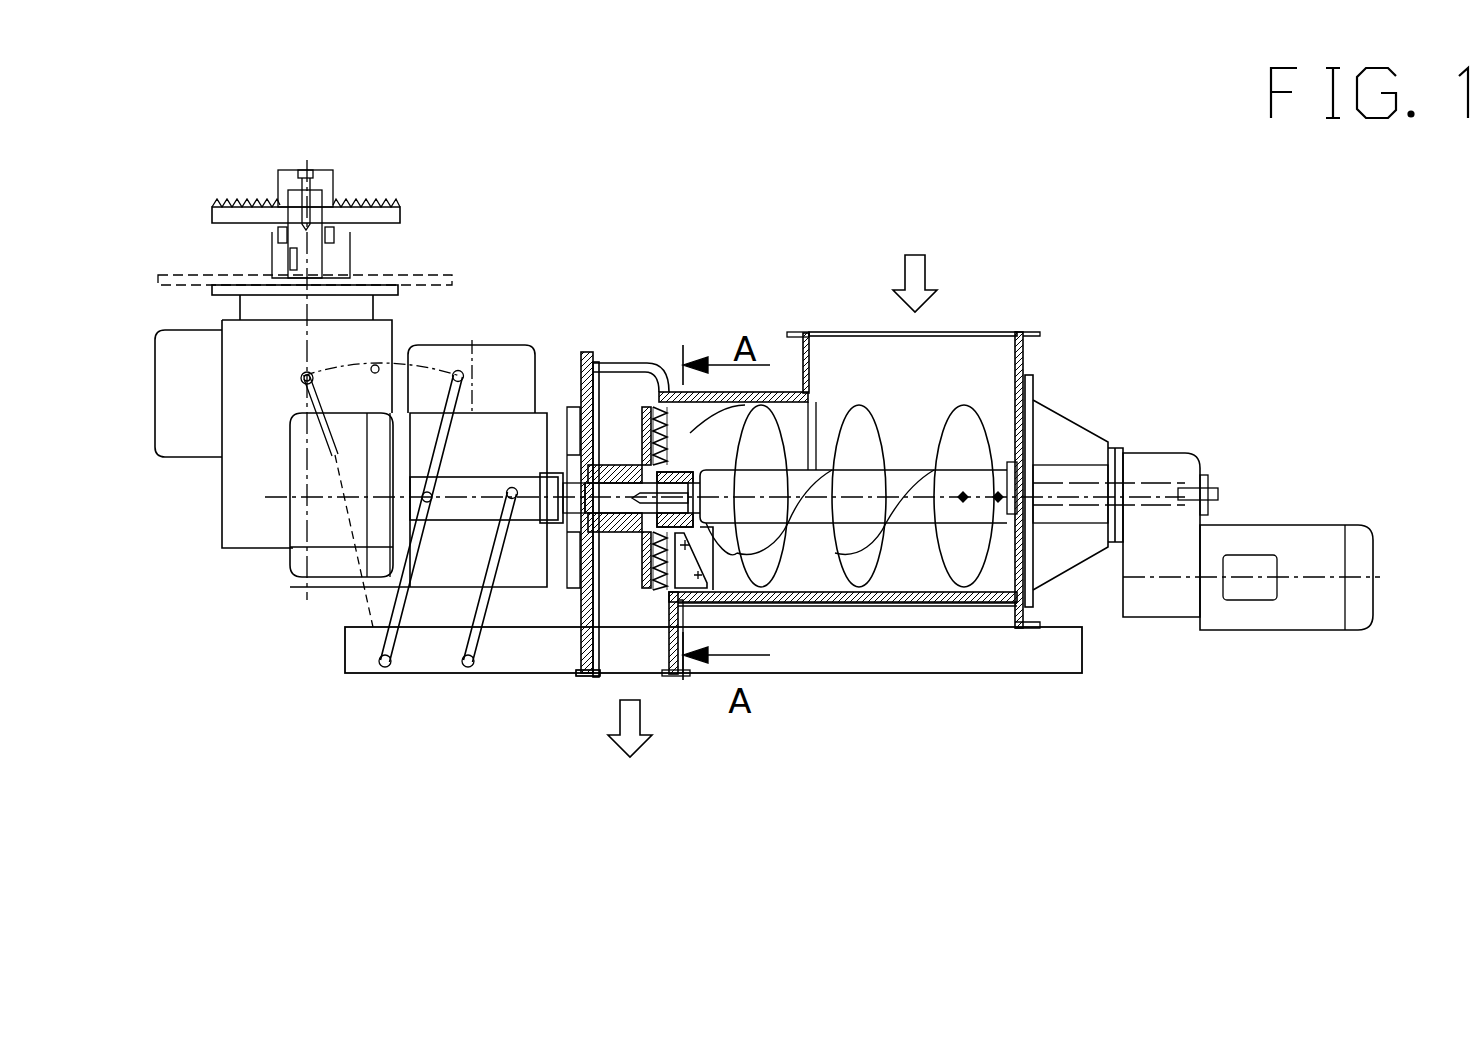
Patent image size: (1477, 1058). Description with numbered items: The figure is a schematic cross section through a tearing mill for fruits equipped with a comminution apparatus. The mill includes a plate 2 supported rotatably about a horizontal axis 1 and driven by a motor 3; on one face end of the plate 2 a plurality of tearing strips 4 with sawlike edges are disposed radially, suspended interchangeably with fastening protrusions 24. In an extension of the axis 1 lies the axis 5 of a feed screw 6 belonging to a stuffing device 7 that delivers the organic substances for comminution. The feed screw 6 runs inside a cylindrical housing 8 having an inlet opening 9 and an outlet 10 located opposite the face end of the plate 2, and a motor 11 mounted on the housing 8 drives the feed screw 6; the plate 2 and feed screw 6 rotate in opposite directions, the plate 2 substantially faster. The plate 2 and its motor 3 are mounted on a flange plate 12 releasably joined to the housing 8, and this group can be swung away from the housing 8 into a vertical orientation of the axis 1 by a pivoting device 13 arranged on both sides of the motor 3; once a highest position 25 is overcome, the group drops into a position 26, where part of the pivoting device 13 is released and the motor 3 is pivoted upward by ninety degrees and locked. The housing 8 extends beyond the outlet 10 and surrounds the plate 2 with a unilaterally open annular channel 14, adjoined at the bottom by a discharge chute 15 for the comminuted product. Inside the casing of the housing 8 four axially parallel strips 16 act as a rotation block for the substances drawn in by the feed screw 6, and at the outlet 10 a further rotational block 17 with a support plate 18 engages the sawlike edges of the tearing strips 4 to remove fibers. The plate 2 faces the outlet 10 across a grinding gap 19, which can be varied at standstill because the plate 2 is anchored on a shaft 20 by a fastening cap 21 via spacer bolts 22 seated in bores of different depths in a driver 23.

The horizontal axis 1 is at (558, 420).
The plate 2 is at (636, 465).
The motor 3 is at (535, 575).
The tearing strips 4 is at (660, 410).
The axis 5 is at (972, 603).
The feed screw 6 is at (873, 606).
The stuffing device 7 is at (1068, 352).
The cylindrical housing 8 is at (875, 590).
The inlet opening 9 is at (1020, 332).
The outlet 10 is at (712, 392).
The motor 11 is at (1305, 522).
The flange plate 12 is at (578, 400).
The pivoting device 13 is at (388, 667).
The annular channel 14 is at (596, 385).
The discharge chute 15 is at (690, 590).
The strips 16 is at (800, 390).
The rotational block 17 is at (742, 603).
The support plate 18 is at (695, 472).
The grinding gap 19 is at (650, 362).
The shaft 20 is at (580, 645).
The fastening cap 21 is at (748, 392).
The spacer bolts 22 is at (625, 535).
The driver 23 is at (600, 535).
The fastening protrusions 24 is at (645, 540).
The highest position 25 is at (375, 365).
The position 26 is at (311, 378).